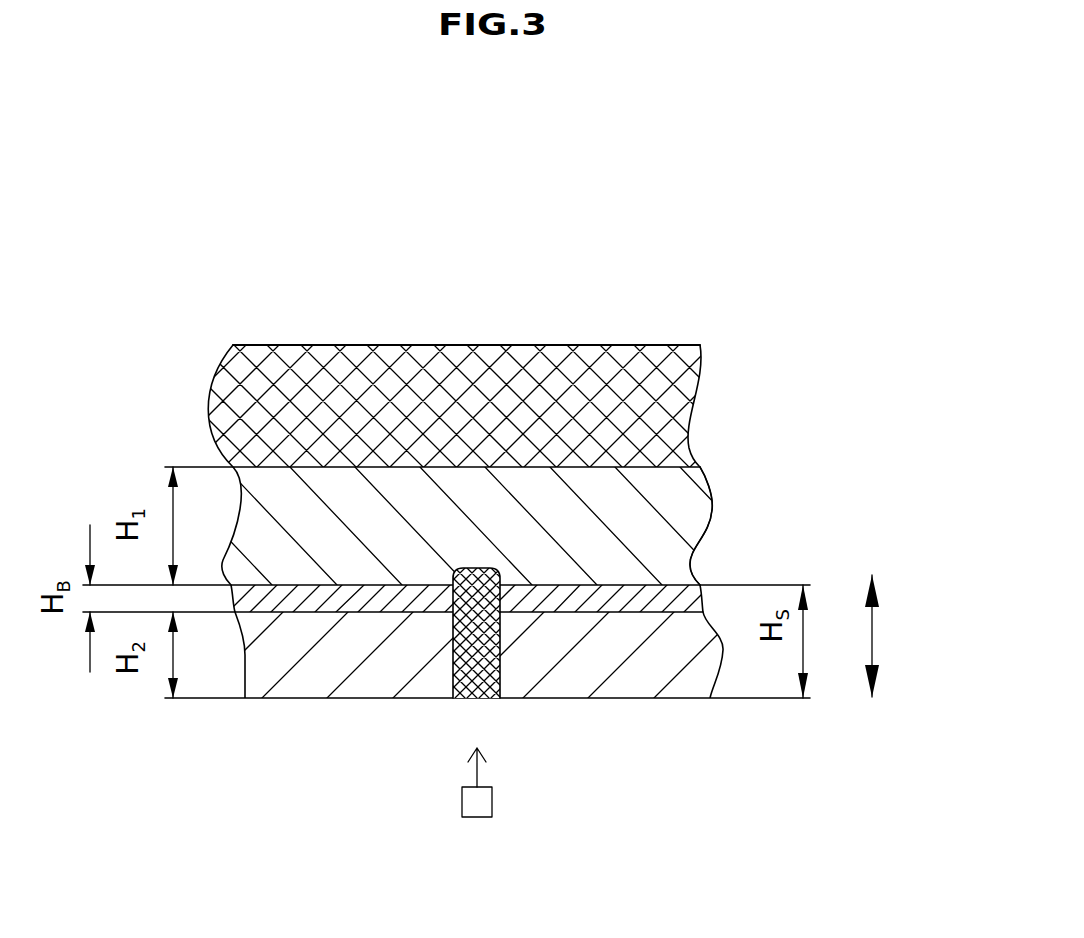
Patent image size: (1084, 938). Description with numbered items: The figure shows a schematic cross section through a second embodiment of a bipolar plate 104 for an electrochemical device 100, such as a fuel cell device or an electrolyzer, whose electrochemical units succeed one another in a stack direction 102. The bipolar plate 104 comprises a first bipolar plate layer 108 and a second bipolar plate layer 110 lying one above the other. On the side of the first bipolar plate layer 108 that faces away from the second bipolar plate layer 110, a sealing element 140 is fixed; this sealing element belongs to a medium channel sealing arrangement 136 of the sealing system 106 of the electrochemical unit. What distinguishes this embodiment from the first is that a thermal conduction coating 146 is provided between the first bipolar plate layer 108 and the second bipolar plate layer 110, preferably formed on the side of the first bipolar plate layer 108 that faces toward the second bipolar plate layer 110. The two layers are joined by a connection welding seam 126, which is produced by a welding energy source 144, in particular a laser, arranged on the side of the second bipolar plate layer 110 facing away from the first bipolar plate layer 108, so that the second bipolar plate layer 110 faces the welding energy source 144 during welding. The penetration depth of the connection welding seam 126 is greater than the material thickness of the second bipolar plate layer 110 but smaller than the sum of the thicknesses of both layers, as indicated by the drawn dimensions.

The electrochemical device 100 is at (286, 315).
The stack direction 102 is at (872, 633).
The bipolar plate 104 is at (737, 517).
The sealing system 106 is at (523, 315).
The first bipolar plate layer 108 is at (680, 500).
The second bipolar plate layer 110 is at (683, 687).
The connection welding seam 126 is at (460, 667).
The medium channel sealing arrangement 136 is at (566, 313).
The sealing element 140 is at (653, 388).
The welding energy source 144 is at (477, 807).
The thermal conduction coating 146 is at (628, 602).